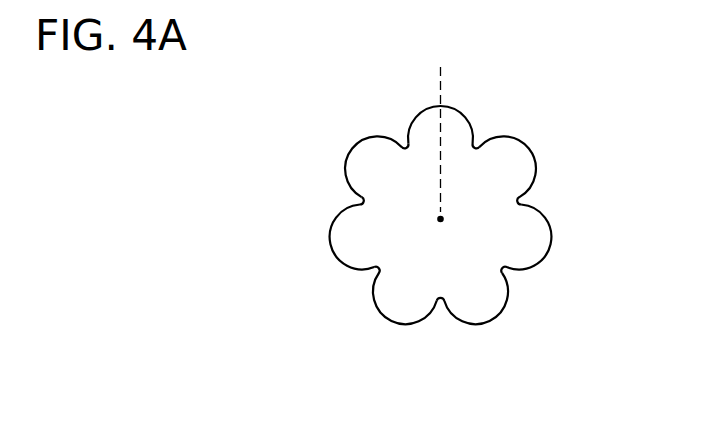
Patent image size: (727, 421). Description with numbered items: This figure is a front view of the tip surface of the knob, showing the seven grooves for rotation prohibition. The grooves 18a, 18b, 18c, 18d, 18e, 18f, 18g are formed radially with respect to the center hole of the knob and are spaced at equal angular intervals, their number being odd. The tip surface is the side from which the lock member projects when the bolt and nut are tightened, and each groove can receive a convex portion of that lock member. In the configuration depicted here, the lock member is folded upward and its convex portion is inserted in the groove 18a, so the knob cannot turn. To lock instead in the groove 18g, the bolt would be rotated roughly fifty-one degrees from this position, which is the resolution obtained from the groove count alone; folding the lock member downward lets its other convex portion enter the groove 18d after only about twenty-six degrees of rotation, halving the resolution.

The groove 18a is at (455, 125).
The groove 18b is at (363, 162).
The groove 18c is at (348, 237).
The groove 18d is at (398, 298).
The groove 18e is at (480, 299).
The groove 18f is at (528, 237).
The groove 18g is at (517, 162).